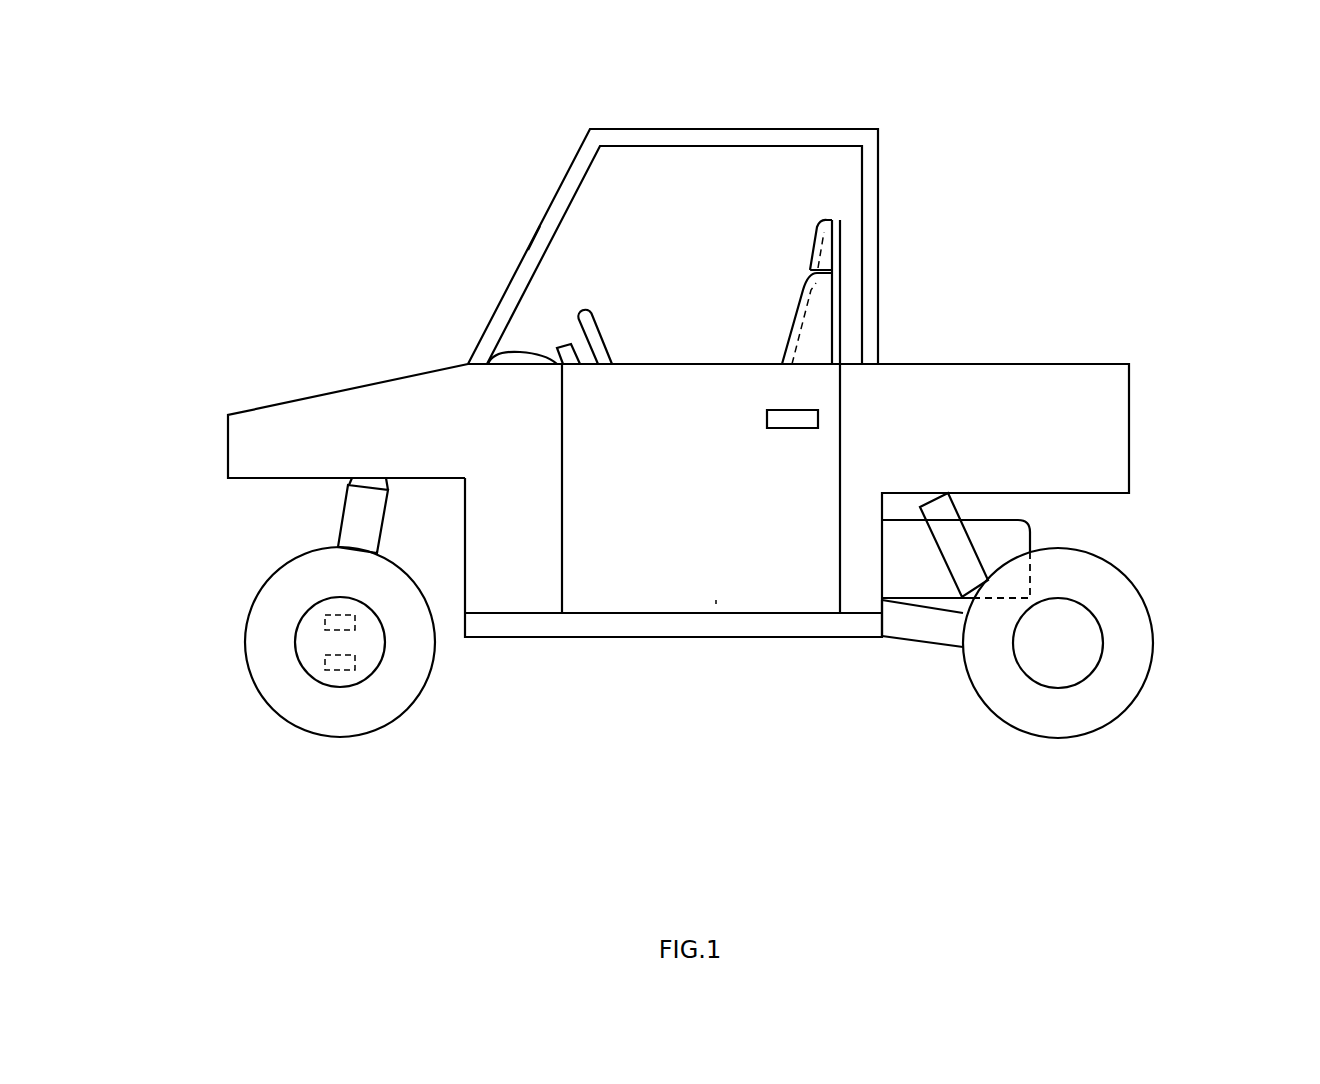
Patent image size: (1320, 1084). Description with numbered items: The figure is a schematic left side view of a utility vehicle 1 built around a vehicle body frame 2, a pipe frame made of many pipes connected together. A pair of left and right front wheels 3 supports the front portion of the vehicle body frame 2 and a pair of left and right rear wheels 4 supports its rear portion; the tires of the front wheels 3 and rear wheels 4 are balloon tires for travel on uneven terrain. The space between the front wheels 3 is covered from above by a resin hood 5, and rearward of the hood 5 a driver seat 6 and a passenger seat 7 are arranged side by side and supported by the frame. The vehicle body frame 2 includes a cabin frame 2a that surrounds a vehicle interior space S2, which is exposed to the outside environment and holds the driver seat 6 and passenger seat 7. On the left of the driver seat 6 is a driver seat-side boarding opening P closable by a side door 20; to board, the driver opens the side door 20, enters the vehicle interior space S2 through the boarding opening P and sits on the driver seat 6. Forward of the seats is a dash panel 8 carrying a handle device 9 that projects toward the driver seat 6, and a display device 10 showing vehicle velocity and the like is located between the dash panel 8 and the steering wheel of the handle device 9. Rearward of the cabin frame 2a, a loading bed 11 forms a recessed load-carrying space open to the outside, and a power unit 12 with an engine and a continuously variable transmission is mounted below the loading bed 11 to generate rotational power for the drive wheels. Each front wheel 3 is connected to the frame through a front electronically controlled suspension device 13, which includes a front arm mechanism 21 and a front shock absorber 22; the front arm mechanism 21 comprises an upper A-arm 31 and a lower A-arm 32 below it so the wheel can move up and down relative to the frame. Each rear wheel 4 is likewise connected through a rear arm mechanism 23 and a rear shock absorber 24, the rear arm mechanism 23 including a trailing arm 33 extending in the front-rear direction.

The utility vehicle 1 is at (389, 169).
The vehicle body frame 2 is at (875, 127).
The cabin frame 2a is at (567, 173).
The front wheel 3 is at (245, 630).
The rear wheel 4 is at (1153, 640).
The hood 5 is at (312, 393).
The driver seat 6 is at (797, 310).
The passenger seat 7 is at (807, 243).
The dash panel 8 is at (522, 350).
The handle device 9 is at (593, 310).
The display device 10 is at (565, 342).
The loading bed 11 is at (1075, 364).
The power unit 12 is at (1025, 518).
The front electronically controlled suspension device 13 is at (634, 698).
The side door 20 is at (655, 587).
The front arm mechanism 21 is at (634, 682).
The front shock absorber 22 is at (380, 530).
The rear arm mechanism 23 is at (927, 633).
The rear shock absorber 24 is at (970, 575).
The upper A-arm 31 is at (325, 620).
The lower A-arm 32 is at (342, 672).
The trailing arm 33 is at (902, 630).
The driver seat-side boarding opening P is at (715, 588).
The vehicle interior space S2 is at (672, 318).